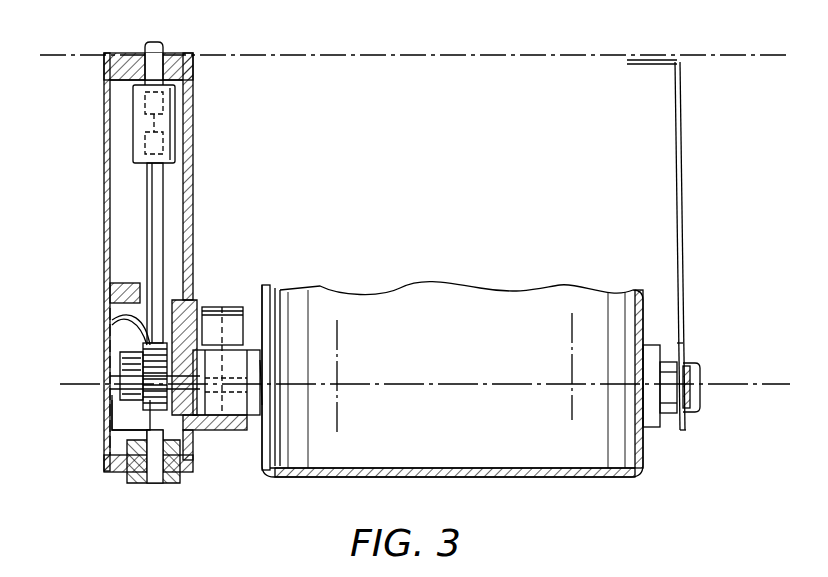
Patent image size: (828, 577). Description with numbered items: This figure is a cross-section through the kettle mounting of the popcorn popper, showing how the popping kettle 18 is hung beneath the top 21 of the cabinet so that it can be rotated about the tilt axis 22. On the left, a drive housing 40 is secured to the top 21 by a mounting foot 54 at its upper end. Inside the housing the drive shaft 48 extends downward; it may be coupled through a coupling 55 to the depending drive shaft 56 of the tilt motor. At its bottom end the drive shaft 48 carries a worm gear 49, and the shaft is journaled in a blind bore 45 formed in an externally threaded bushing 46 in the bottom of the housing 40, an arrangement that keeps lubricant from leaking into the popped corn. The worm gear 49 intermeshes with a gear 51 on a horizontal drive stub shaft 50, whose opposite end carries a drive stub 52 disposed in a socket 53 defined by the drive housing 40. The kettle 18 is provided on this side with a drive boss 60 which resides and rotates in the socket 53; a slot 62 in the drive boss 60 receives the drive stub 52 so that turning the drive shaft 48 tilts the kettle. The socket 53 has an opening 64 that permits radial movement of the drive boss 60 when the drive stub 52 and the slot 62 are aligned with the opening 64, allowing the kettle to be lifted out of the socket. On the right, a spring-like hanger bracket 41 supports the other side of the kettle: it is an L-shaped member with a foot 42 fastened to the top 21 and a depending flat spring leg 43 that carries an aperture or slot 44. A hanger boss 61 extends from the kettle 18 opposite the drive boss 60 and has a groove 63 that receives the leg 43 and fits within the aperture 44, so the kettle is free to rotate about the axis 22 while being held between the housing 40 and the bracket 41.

The popping kettle 18 is at (655, 462).
The top of the cabinet 21 is at (455, 53).
The tilt axis 22 is at (500, 380).
The drive housing 40 is at (104, 180).
The spring-like hanger bracket 41 is at (688, 170).
The foot 42 is at (652, 66).
The depending flat spring leg 43 is at (687, 272).
The aperture or slot 44 is at (700, 397).
The blind bore 45 is at (160, 485).
The externally threaded bushing 46 is at (108, 472).
The drive shaft 48 is at (160, 197).
The worm gear 49 is at (140, 395).
The drive stub shaft 50 is at (118, 380).
The gear 51 is at (112, 320).
The drive stub 52 is at (222, 300).
The socket 53 is at (237, 332).
The mounting foot 54 is at (118, 68).
The coupling 55 is at (170, 118).
The depending drive shaft 56 is at (164, 50).
The drive boss 60 is at (236, 393).
The hanger boss 61 is at (702, 360).
The slot 62 is at (290, 355).
The groove 63 is at (692, 380).
The opening 64 is at (230, 300).